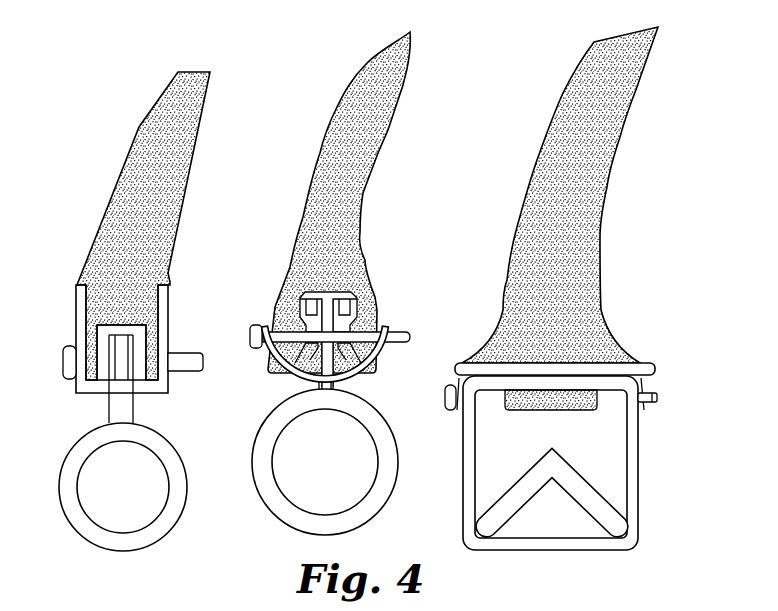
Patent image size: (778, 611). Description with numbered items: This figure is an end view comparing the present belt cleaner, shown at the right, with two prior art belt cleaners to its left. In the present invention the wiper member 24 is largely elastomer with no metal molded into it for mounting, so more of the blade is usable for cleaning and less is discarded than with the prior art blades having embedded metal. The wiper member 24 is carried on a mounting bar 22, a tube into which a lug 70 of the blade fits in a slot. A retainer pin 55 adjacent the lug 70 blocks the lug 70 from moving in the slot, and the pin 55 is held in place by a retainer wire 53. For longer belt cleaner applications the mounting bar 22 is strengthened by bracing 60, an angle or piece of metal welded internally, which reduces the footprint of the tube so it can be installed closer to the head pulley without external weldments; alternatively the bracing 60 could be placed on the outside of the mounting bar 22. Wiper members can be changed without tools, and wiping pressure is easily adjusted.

The wiper member 24 is at (547, 270).
The retainer wire 53 is at (605, 365).
The mounting bar 22 is at (573, 550).
The lug 70 is at (557, 412).
The bracing 60 is at (545, 453).
The retainer pin 55 is at (658, 397).